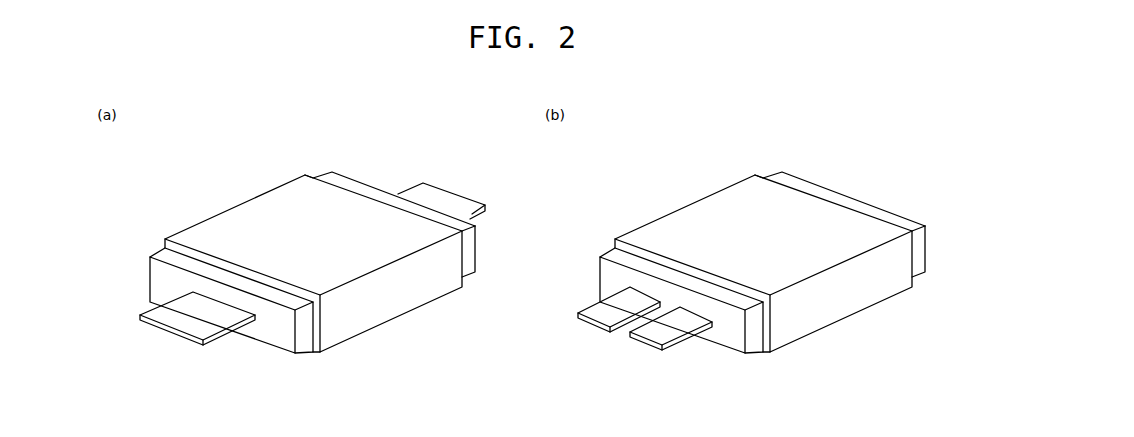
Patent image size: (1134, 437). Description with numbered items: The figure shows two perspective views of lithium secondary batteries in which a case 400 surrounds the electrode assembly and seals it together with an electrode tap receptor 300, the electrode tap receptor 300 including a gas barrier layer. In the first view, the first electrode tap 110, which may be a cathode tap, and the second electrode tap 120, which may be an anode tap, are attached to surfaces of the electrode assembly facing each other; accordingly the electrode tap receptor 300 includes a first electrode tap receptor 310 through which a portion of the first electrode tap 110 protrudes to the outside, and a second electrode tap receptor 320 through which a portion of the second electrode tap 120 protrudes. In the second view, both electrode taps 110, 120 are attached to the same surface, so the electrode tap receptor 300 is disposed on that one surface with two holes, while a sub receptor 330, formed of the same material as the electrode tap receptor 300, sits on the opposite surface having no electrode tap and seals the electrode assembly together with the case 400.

The first electrode tap 110 is at (182, 320).
The second electrode tap 120 is at (440, 201).
The electrode tap receptor 300 is at (750, 338).
The first electrode tap receptor 310 is at (305, 337).
The second electrode tap receptor 320 is at (470, 266).
The sub receptor 330 is at (917, 265).
The case 400 is at (265, 217).